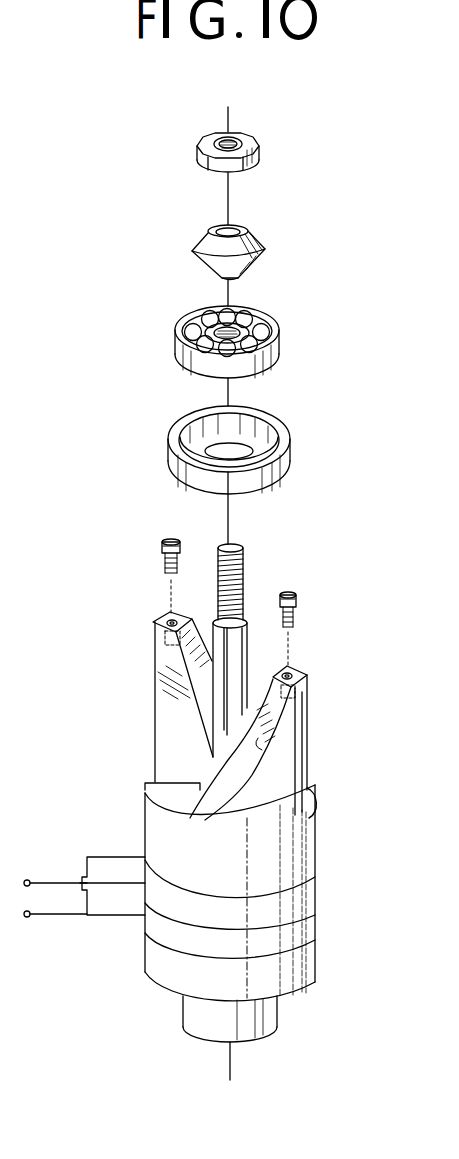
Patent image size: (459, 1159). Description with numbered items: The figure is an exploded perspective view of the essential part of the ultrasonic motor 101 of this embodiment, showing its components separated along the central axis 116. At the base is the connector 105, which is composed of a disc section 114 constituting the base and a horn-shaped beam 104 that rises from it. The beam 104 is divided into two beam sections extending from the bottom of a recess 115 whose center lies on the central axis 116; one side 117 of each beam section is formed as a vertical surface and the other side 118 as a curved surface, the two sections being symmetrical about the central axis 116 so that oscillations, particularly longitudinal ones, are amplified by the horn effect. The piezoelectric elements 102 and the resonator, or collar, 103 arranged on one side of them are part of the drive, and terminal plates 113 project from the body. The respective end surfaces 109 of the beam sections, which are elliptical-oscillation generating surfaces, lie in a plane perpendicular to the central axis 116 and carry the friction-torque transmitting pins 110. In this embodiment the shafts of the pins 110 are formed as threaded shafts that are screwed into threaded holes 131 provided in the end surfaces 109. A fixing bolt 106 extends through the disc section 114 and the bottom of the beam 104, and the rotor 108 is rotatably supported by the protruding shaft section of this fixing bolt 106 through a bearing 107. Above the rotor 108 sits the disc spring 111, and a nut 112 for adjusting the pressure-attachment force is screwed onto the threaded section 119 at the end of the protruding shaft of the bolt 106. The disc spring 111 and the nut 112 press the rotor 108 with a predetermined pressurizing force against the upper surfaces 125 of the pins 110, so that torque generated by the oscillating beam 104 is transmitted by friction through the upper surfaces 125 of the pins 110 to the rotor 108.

The ultrasonic motor 101 is at (343, 551).
The piezoelectric elements 102 is at (316, 880).
The resonator (collar) 103 is at (316, 958).
The beam 104 is at (169, 693).
The connector 105 is at (323, 834).
The fixing bolt 106 is at (238, 694).
The bearing 107 is at (281, 337).
The rotor 108 is at (292, 442).
The end surfaces of the beam sections 109 is at (309, 674).
The friction-torque transmitting pins 110 is at (161, 552).
The disc spring 111 is at (262, 244).
The nut for adjusting the pressure-attachment force 112 is at (257, 146).
The terminal plates 113 is at (103, 857).
The disc section 114 is at (165, 830).
The recess 115 is at (193, 645).
The central axis 116 is at (232, 1058).
The one side of the beam section 117 is at (170, 733).
The other side of the beam section 118 is at (263, 751).
The threaded section 119 is at (245, 553).
The upper surfaces of the pins 125 is at (167, 540).
The threaded holes 131 is at (167, 620).